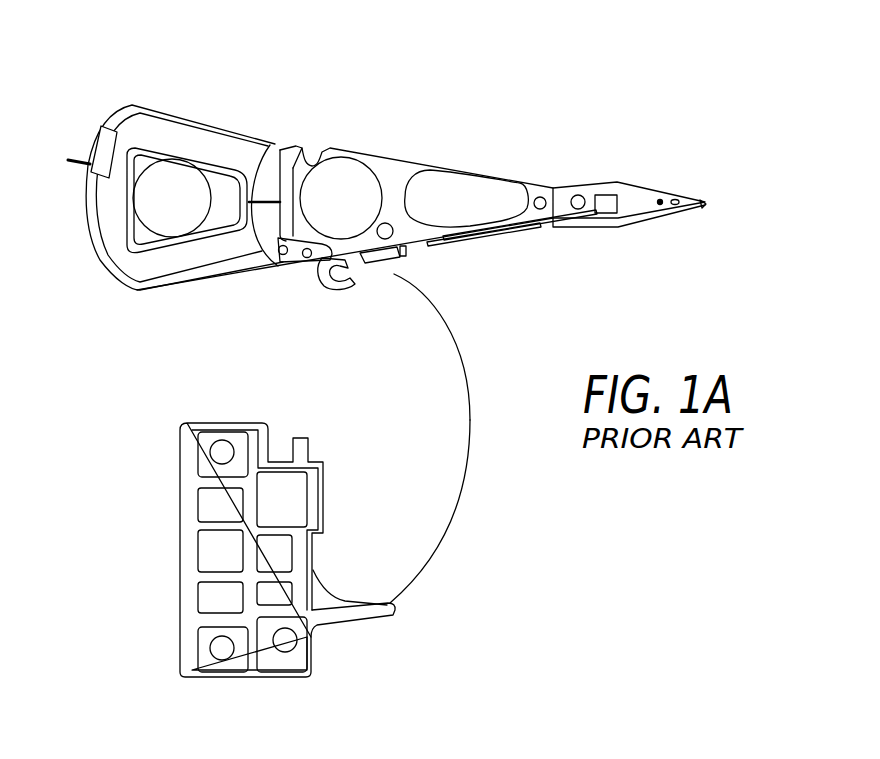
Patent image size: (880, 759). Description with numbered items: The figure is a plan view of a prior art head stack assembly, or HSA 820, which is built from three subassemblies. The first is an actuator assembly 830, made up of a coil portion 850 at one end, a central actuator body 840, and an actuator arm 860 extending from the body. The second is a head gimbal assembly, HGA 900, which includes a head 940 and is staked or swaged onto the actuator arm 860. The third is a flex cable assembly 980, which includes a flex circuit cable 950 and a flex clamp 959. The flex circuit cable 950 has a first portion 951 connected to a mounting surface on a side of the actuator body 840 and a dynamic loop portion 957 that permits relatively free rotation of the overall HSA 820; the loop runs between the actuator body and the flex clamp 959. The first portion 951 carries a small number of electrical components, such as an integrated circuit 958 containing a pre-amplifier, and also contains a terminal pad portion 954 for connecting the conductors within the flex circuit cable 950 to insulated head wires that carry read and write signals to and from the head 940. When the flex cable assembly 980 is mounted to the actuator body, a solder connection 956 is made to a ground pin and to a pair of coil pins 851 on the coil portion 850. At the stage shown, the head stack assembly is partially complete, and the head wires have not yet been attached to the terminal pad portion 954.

The HSA 820 is at (638, 105).
The actuator assembly 830 is at (563, 122).
The actuator body 840 is at (393, 107).
The coil portion 850 is at (152, 103).
The coil pins 851 is at (306, 258).
The actuator arm 860 is at (461, 168).
The HGA 900 is at (642, 196).
The head 940 is at (708, 203).
The flex circuit cable 950 is at (462, 522).
The first portion 951 is at (413, 251).
The terminal pad portion 954 is at (410, 245).
The solder connection 956 is at (417, 249).
The dynamic loop portion 957 is at (466, 362).
The integrated circuit 958 is at (391, 278).
The flex clamp 959 is at (178, 610).
The flex cable assembly 980 is at (443, 578).